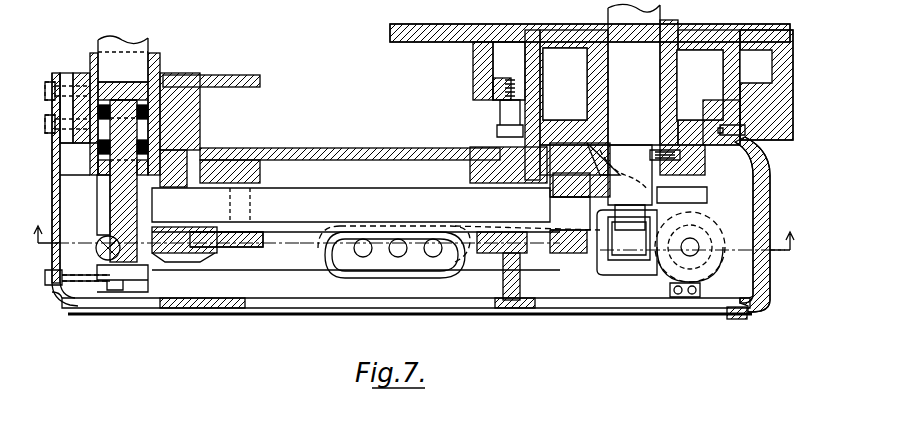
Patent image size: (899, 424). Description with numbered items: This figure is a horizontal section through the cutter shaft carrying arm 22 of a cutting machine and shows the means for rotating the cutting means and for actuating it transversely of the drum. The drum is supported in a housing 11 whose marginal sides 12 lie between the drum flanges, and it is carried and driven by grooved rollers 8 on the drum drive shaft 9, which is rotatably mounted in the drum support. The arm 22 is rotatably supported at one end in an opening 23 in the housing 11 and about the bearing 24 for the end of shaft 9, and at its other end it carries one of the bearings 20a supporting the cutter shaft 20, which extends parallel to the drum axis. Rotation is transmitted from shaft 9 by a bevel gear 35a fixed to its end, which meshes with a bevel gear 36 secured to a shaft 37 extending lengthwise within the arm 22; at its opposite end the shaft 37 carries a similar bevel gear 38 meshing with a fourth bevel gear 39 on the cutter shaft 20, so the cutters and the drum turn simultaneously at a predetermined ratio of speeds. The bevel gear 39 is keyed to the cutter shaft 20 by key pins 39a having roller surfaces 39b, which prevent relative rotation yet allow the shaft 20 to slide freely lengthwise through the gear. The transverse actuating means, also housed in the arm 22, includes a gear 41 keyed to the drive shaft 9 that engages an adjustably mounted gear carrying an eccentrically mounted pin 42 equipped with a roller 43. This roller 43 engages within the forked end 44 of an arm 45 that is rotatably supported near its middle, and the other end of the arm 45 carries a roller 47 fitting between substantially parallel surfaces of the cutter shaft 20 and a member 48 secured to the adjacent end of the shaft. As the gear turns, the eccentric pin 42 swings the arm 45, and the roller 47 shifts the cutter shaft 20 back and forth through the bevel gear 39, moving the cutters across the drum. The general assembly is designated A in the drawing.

The cutter shaft 20 is at (118, 46).
The bearings 20a is at (195, 73).
The fourth bevel gear 39 is at (100, 168).
The key pins 39a is at (165, 140).
The roller surfaces 39b is at (185, 158).
The roller 47 is at (98, 244).
The member 48 is at (104, 272).
The rollers 8 is at (413, 254).
The bevel gear 38 is at (212, 252).
The arm 22 is at (332, 150).
The shaft 37 is at (380, 198).
The arm 45 is at (302, 262).
The bevel gear 36 is at (568, 255).
The gear 41 is at (627, 242).
The marginal sides 12 is at (452, 26).
The housing 11 is at (480, 70).
The shaft 9 is at (612, 12).
The housing assembly A is at (682, 26).
The opening 23 is at (748, 40).
The bearing 24 is at (585, 106).
The bevel gear 35a is at (705, 176).
The forked end 44 is at (707, 196).
The roller 43 is at (696, 244).
The eccentrically mounted pin 42 is at (705, 262).